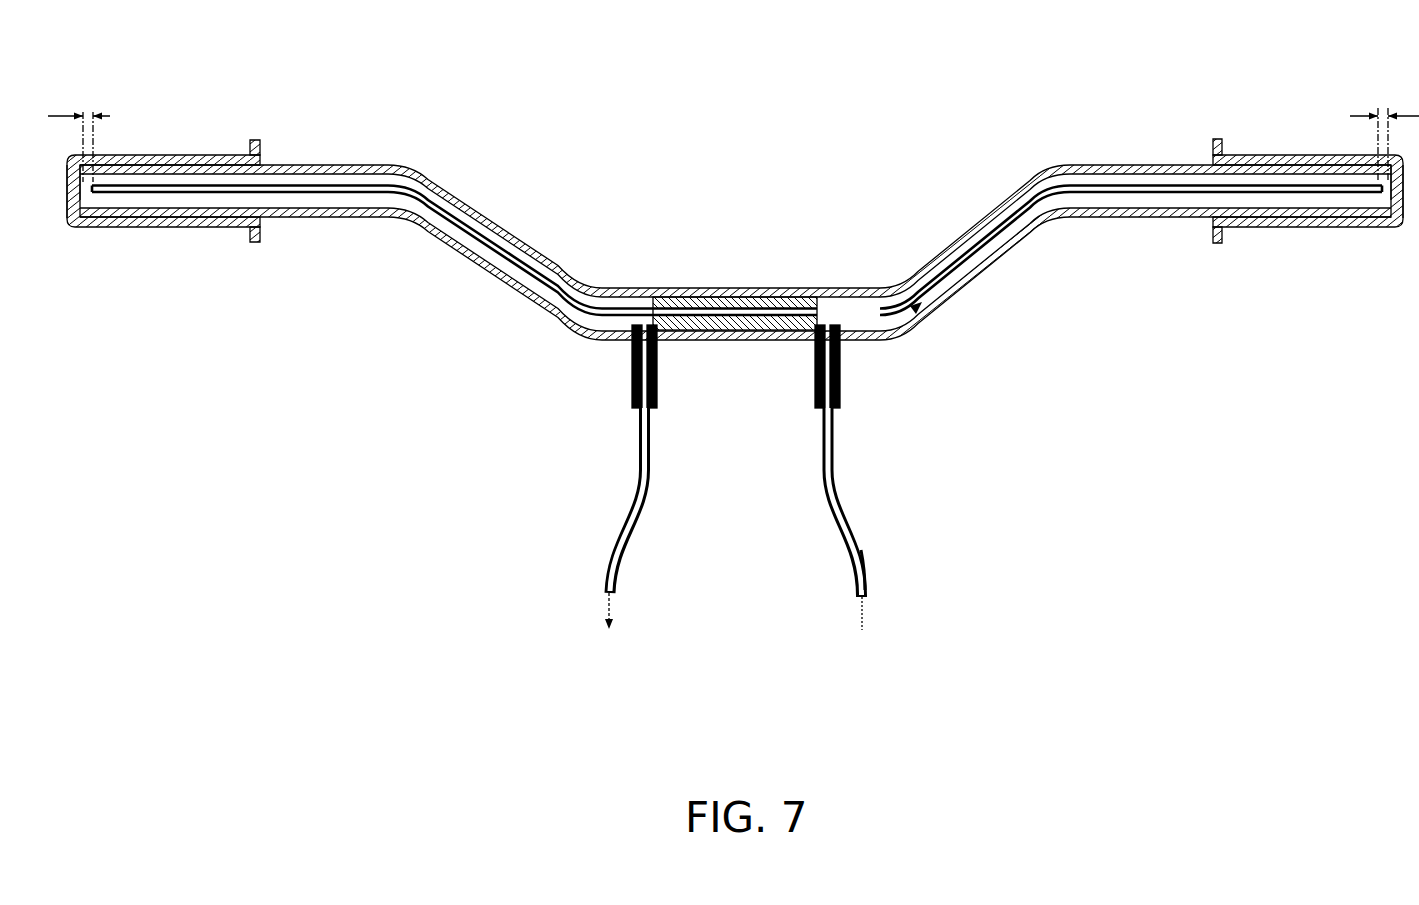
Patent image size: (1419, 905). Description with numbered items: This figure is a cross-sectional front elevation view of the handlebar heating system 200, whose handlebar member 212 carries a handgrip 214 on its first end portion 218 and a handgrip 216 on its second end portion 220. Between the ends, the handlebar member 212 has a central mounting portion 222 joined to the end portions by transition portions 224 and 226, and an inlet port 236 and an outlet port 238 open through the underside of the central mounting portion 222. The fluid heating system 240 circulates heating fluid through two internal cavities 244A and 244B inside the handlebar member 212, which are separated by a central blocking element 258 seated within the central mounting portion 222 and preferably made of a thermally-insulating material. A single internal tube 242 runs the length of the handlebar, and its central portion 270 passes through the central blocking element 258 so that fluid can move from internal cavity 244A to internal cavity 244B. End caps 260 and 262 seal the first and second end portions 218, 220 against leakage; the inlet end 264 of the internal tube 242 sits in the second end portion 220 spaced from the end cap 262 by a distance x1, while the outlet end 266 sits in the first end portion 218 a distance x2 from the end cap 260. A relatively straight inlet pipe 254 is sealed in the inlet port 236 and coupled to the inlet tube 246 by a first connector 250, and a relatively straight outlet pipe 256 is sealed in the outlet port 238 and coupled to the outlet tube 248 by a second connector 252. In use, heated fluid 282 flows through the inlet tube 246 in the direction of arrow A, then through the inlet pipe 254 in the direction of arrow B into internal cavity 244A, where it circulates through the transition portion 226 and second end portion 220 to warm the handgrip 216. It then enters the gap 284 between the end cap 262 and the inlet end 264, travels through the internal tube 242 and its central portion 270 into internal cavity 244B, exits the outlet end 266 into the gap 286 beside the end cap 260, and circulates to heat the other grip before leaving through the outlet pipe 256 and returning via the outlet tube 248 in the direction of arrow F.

The handlebar heating system 200 is at (490, 92).
The fluid heating system 240 is at (877, 188).
The handgrip 214 is at (195, 148).
The handgrip 216 is at (1290, 131).
The gap 286 is at (95, 168).
The gap 284 is at (1385, 165).
The end cap 260 is at (66, 192).
The end cap 262 is at (1402, 198).
The outlet end of the internal tube 266 is at (112, 197).
The inlet end of the internal tube 264 is at (1360, 194).
The handlebar member 212 is at (507, 228).
The first end portion 218 is at (300, 222).
The central mounting portion 222 is at (793, 285).
The transition portion 224 is at (474, 272).
The transition portion 226 is at (1003, 268).
The second end portion 220 is at (1205, 163).
The internal tube 242 is at (590, 298).
The internal cavity 244A is at (1047, 192).
The internal cavity 244B is at (446, 204).
The central blocking element 258 is at (736, 296).
The central portion of the internal tube 270 is at (771, 302).
The outlet pipe 256 is at (656, 343).
The outlet port 238 is at (621, 341).
The inlet port 236 is at (851, 347).
The second connector 252 is at (631, 364).
The inlet pipe 254 is at (812, 345).
The first connector 250 is at (843, 378).
The outlet tube 248 is at (627, 505).
The inlet tube 246 is at (848, 502).
The heated fluid 282 is at (858, 554).
The arrow B is at (884, 340).
The arrow F is at (607, 611).
The arrow A is at (864, 619).
The distance x1 is at (1382, 134).
The distance x2 is at (93, 136).